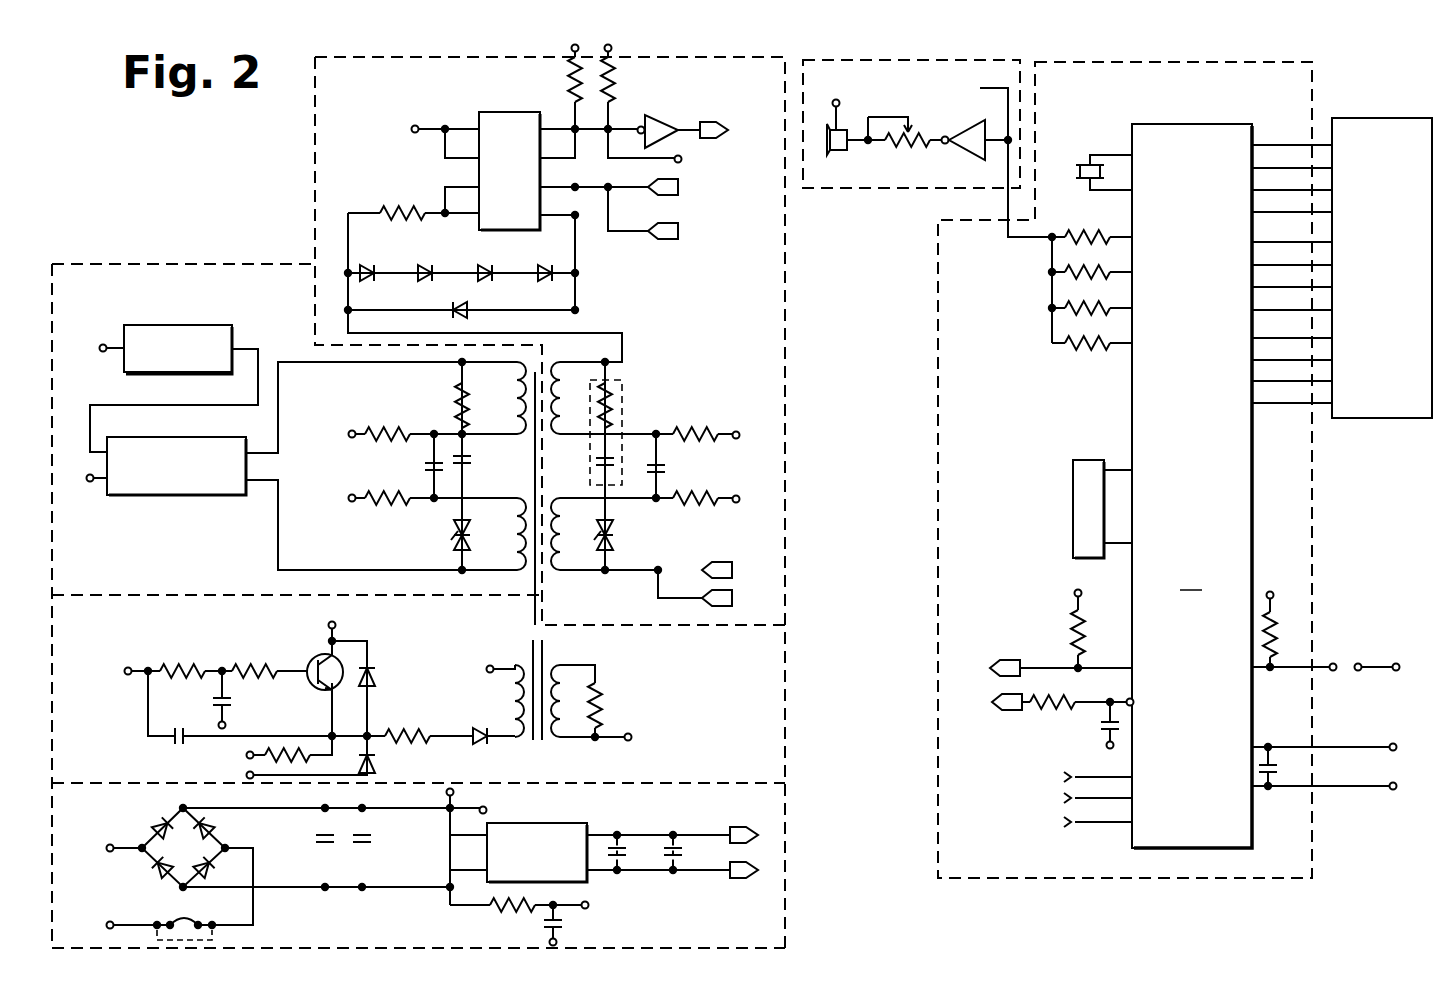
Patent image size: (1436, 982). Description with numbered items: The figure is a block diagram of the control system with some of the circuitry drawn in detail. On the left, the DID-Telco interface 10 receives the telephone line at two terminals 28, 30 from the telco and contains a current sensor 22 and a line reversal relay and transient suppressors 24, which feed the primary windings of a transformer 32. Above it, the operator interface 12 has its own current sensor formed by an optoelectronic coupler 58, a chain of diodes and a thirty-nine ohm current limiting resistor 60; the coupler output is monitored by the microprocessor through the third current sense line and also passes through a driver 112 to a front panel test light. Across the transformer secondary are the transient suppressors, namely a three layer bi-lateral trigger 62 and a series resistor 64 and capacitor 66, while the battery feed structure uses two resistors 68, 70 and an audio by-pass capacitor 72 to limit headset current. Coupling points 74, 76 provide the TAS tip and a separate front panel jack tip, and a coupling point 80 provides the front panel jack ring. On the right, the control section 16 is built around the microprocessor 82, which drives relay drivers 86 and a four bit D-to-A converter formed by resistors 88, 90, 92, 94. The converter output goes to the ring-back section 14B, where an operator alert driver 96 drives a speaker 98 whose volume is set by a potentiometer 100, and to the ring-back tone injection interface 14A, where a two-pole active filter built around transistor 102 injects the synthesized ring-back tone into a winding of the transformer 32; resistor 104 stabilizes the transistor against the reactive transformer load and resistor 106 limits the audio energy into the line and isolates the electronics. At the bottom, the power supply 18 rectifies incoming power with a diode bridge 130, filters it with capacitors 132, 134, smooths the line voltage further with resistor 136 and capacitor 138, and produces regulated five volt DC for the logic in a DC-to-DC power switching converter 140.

The DID-Telco interface 10 is at (160, 264).
The operator interface 12 is at (733, 57).
The ring-back tone injection interface 14A is at (786, 680).
The ring-back section 14B is at (980, 60).
The control section 16 is at (938, 516).
The power supply 18 is at (785, 864).
The current sensor 22 is at (207, 325).
The line reversal relay and transient suppressors 24 is at (218, 496).
The tip lead from telco 28 is at (103, 344).
The ring lead from telco 30 is at (88, 476).
The transformer 32 is at (524, 473).
The optoelectronic coupler 58 is at (517, 112).
The current limiting resistor 60 is at (425, 215).
The three layer bi-lateral trigger 62 is at (614, 541).
The resistor 64 is at (613, 397).
The capacitor 66 is at (613, 459).
The resistor 68 is at (709, 432).
The resistor 70 is at (708, 507).
The audio by-pass capacitor 72 is at (663, 470).
The coupling point 74 is at (652, 193).
The coupling point 76 is at (652, 235).
The coupling point 80 is at (712, 567).
The microprocessor 82 is at (1192, 486).
The relay drivers 86 is at (1073, 508).
The resistor 88 is at (1068, 347).
The resistor 90 is at (1068, 312).
The resistor 92 is at (1068, 276).
The resistor 94 is at (1065, 240).
The operator alert driver 96 is at (975, 121).
The speaker 98 is at (844, 152).
The potentiometer 100 is at (912, 150).
The transistor 102 is at (313, 660).
The resistor 104 is at (238, 680).
The resistor 106 is at (286, 748).
The driver 112 is at (665, 118).
The diode bridge 130 is at (165, 828).
The capacitor 132 is at (317, 845).
The capacitor 134 is at (368, 850).
The resistor 136 is at (493, 896).
The capacitor 138 is at (548, 930).
The DC-to-DC power switching converter 140 is at (557, 823).